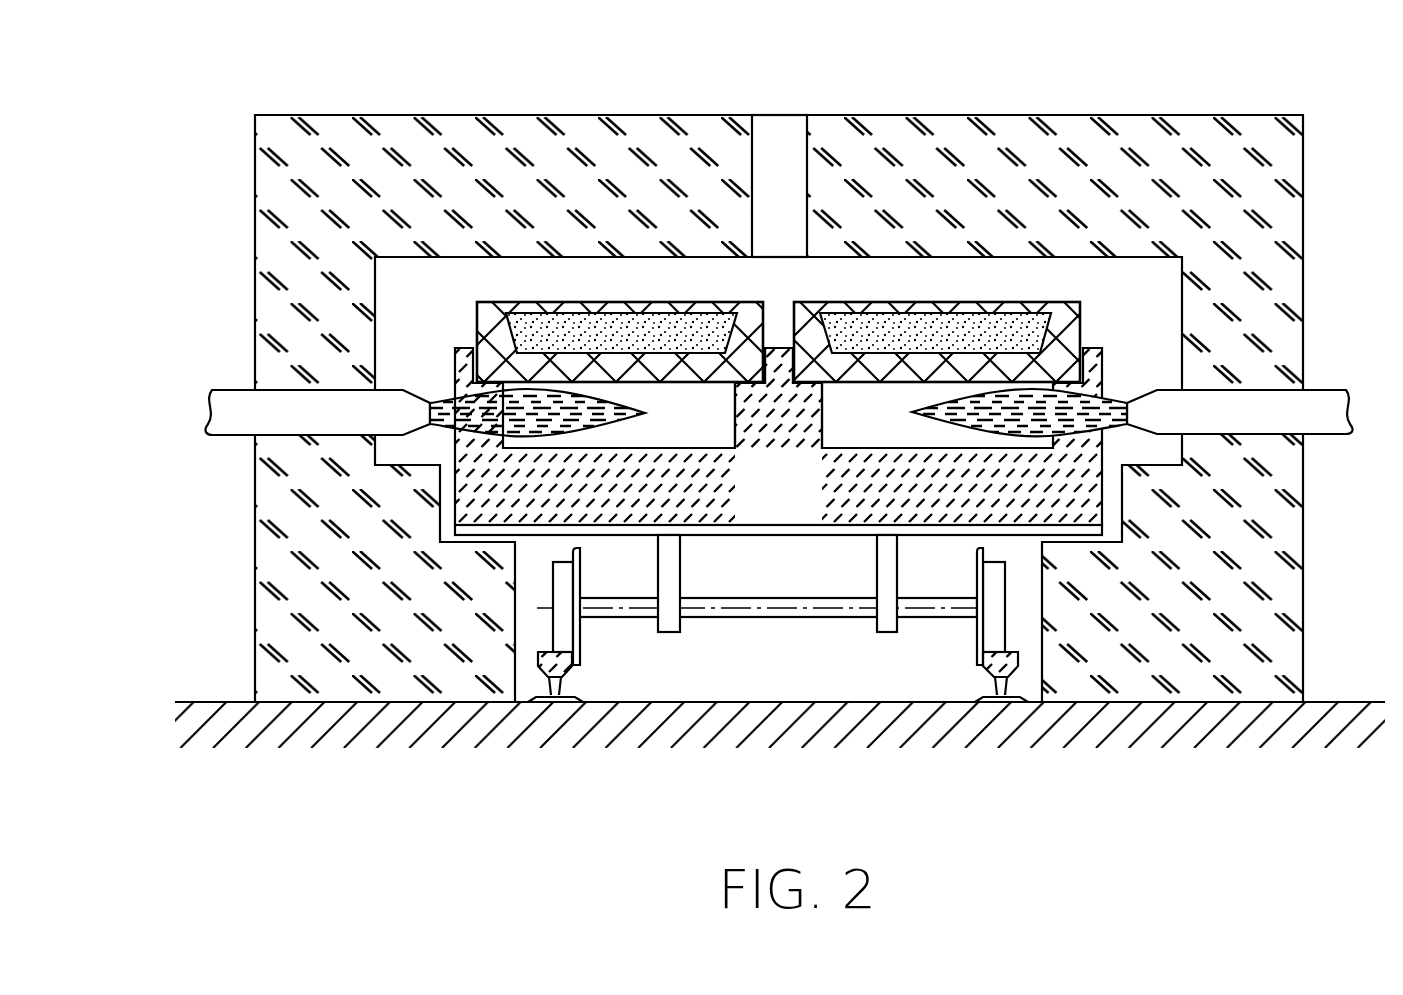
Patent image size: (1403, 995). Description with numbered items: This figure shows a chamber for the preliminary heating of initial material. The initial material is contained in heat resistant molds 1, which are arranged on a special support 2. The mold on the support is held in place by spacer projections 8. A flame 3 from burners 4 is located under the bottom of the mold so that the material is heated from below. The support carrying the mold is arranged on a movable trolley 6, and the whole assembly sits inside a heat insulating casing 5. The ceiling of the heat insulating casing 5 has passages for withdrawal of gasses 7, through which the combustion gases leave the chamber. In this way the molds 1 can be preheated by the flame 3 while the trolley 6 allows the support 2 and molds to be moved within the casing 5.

The heat resistant molds 1 is at (592, 343).
The special support 2 is at (792, 463).
The flame 3 is at (1115, 398).
The burners 4 is at (1227, 410).
The heat insulating casing 5 is at (1097, 210).
The movable trolley 6 is at (995, 587).
The passages for withdrawal of gasses 7 is at (785, 186).
The spacer projections 8 is at (787, 352).